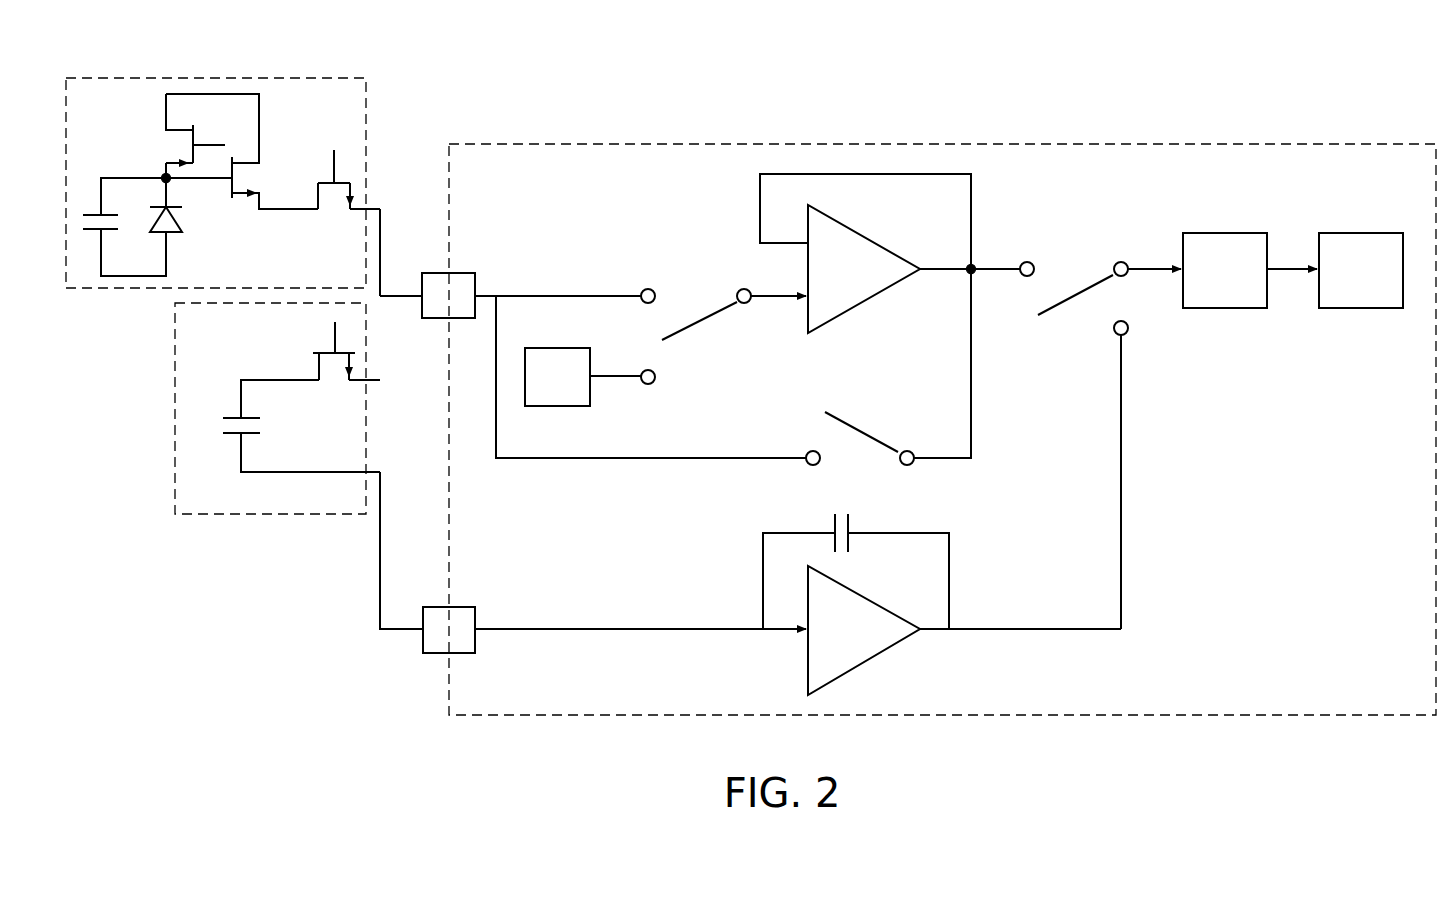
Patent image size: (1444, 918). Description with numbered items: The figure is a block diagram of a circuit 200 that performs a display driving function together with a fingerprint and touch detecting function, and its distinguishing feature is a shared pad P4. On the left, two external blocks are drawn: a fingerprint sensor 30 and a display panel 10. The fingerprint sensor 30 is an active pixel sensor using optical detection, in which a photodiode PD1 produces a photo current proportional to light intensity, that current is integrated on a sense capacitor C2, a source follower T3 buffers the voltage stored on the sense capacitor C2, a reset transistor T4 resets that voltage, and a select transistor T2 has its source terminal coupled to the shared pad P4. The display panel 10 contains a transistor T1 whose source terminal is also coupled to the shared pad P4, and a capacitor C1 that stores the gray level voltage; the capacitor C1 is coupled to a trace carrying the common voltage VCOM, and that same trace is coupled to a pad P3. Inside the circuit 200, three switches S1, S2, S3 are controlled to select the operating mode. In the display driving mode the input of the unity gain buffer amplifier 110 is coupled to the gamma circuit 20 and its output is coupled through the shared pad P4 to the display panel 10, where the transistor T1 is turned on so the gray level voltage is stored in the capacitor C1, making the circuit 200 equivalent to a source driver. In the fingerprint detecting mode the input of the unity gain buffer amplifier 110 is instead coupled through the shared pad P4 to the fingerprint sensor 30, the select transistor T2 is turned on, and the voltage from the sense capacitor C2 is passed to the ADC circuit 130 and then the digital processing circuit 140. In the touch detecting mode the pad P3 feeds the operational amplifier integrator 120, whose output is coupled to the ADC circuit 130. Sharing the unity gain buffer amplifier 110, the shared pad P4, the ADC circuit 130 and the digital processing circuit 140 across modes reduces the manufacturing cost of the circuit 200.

The fingerprint sensor 30 is at (287, 78).
The display panel 10 is at (175, 478).
The circuit 200 is at (1365, 697).
The gamma circuit 20 is at (543, 392).
The unity gain buffer amplifier 110 is at (823, 285).
The operational amplifier integrator 120 is at (823, 645).
The ADC circuit 130 is at (1203, 285).
The digital processing circuit 140 is at (1339, 285).
The transistor T1 is at (346, 367).
The select transistor T2 is at (348, 196).
The source follower T3 is at (242, 183).
The reset transistor T4 is at (193, 136).
The capacitor C1 is at (282, 426).
The sense capacitor C2 is at (124, 227).
The photodiode PD1 is at (188, 221).
The common voltage VCOM is at (240, 494).
The pad P3 is at (434, 644).
The shared pad P4 is at (434, 310).
The switch S1 is at (696, 336).
The switch S2 is at (860, 434).
The switch S3 is at (1074, 445).